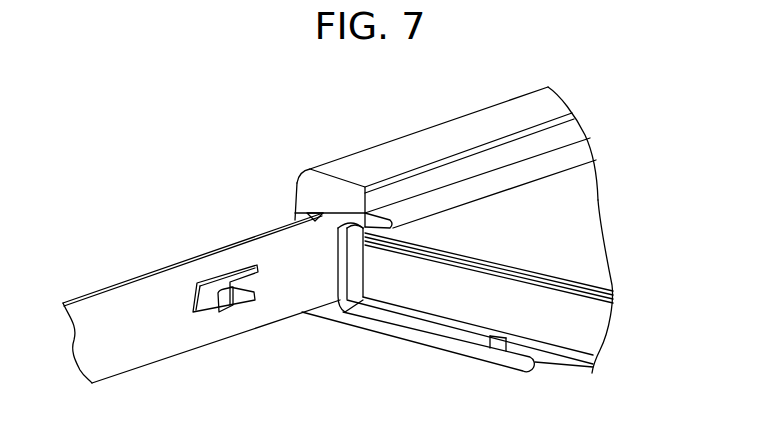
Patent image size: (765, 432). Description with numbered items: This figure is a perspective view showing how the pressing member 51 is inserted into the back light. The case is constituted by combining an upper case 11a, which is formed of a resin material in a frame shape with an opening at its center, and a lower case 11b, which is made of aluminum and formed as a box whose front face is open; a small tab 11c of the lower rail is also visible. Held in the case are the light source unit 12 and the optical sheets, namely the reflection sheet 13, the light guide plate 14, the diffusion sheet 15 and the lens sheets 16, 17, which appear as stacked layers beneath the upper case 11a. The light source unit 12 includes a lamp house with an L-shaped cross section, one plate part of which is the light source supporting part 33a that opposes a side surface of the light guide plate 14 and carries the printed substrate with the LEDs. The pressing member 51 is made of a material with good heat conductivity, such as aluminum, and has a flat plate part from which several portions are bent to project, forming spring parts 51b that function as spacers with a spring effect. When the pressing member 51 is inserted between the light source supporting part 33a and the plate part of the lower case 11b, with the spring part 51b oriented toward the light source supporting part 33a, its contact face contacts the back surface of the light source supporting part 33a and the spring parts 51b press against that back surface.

The upper case 11a is at (390, 156).
The lower case 11b is at (566, 356).
The tab of lower rail 11c is at (460, 352).
The light source unit 12 is at (346, 313).
The reflection sheet 13 is at (597, 358).
The light guide plate 14 is at (582, 327).
The diffusion sheet 15 is at (613, 299).
The lens sheet 16 is at (613, 296).
The lens sheet 17 is at (613, 293).
The light source supporting part 33a is at (337, 263).
The pressing member 51 is at (158, 272).
The spring part 51b is at (228, 317).